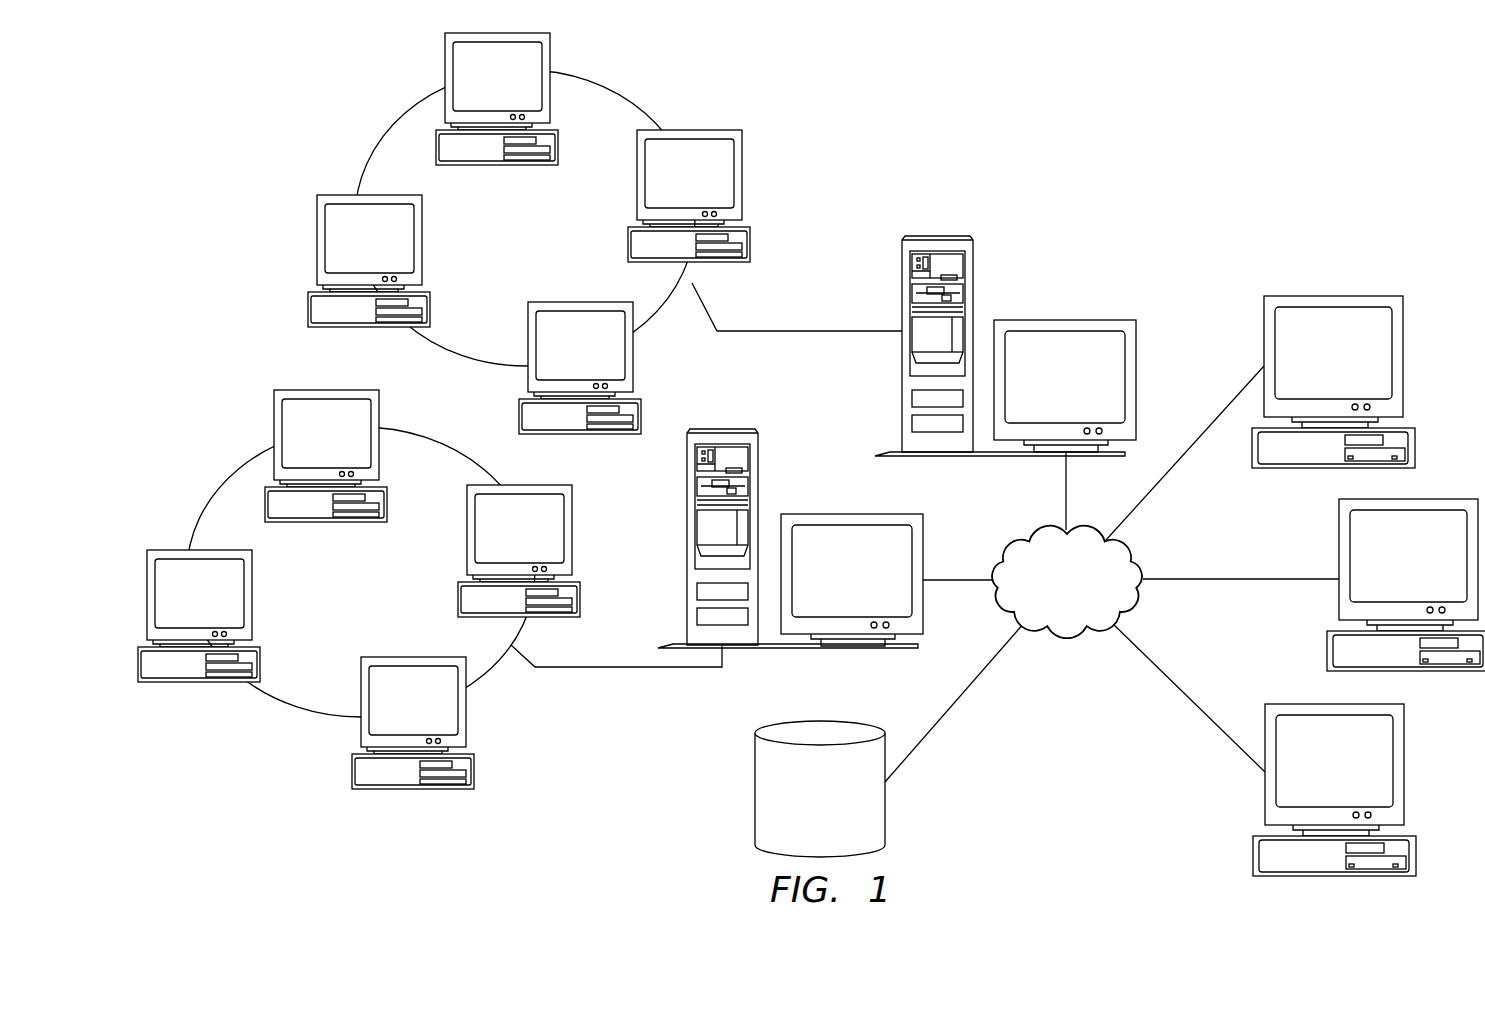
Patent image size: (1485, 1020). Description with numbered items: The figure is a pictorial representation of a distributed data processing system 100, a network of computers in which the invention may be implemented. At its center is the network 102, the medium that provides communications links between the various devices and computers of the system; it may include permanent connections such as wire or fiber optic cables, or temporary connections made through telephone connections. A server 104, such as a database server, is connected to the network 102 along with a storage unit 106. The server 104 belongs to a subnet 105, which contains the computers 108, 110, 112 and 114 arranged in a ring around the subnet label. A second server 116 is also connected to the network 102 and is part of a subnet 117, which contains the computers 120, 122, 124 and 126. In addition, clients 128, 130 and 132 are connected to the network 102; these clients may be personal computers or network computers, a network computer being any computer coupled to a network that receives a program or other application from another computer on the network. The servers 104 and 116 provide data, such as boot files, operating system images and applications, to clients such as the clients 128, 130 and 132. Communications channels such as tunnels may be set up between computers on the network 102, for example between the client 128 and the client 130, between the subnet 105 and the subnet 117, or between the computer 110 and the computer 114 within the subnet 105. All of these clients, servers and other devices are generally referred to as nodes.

The distributed data processing system 100 is at (1156, 128).
The network 102 is at (1047, 607).
The server 104 is at (832, 580).
The subnet 105 is at (338, 607).
The storage unit 106 is at (800, 824).
The computer 108 is at (500, 538).
The computer 110 is at (307, 445).
The computer 112 is at (180, 605).
The computer 114 is at (393, 713).
The server 116 is at (1046, 386).
The subnet 117 is at (507, 255).
The computer 120 is at (669, 186).
The computer 122 is at (477, 90).
The computer 124 is at (350, 251).
The computer 126 is at (563, 357).
The client 128 is at (1315, 366).
The client 130 is at (1388, 570).
The client 132 is at (1315, 775).